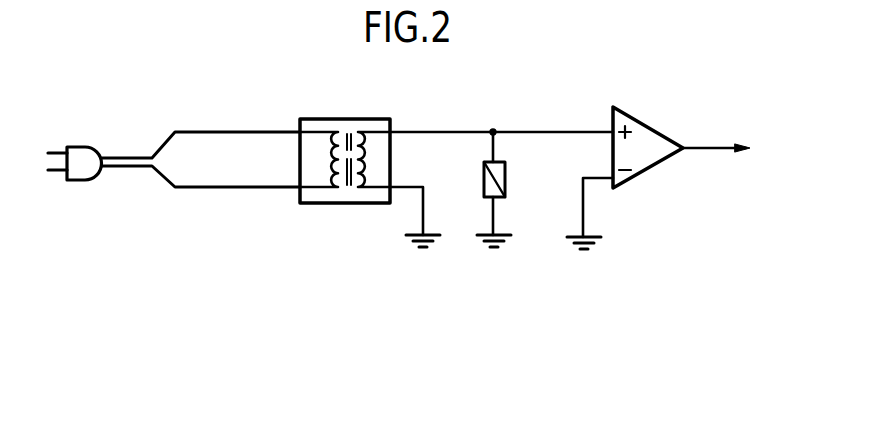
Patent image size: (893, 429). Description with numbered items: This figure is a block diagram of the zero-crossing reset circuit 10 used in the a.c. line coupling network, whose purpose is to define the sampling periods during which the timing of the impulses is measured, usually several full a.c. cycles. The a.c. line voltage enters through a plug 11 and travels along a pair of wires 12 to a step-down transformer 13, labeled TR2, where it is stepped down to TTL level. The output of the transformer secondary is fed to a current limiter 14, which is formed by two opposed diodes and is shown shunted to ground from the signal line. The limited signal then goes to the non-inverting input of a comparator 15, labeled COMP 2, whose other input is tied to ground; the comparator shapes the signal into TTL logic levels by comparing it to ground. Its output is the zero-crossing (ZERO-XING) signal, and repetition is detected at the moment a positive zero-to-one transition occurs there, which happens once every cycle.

The zero-crossing reset circuit 10 is at (219, 215).
The plug 11 is at (83, 181).
The wires 12 is at (218, 133).
The step-down transformer 13 is at (325, 204).
The current limiter 14 is at (506, 186).
The comparator 15 is at (651, 137).